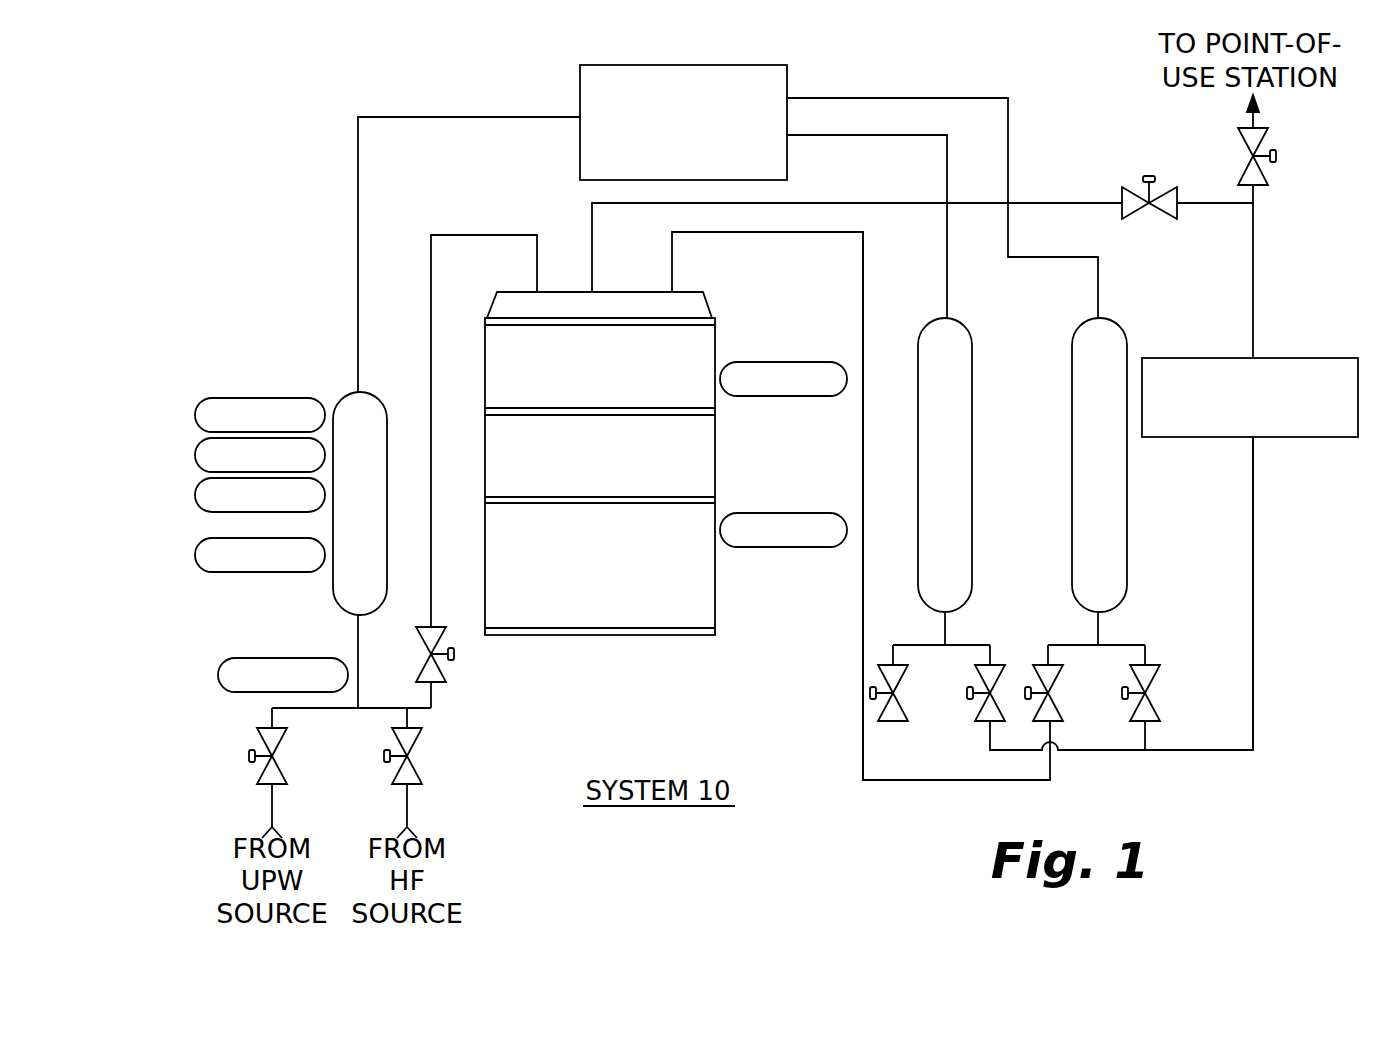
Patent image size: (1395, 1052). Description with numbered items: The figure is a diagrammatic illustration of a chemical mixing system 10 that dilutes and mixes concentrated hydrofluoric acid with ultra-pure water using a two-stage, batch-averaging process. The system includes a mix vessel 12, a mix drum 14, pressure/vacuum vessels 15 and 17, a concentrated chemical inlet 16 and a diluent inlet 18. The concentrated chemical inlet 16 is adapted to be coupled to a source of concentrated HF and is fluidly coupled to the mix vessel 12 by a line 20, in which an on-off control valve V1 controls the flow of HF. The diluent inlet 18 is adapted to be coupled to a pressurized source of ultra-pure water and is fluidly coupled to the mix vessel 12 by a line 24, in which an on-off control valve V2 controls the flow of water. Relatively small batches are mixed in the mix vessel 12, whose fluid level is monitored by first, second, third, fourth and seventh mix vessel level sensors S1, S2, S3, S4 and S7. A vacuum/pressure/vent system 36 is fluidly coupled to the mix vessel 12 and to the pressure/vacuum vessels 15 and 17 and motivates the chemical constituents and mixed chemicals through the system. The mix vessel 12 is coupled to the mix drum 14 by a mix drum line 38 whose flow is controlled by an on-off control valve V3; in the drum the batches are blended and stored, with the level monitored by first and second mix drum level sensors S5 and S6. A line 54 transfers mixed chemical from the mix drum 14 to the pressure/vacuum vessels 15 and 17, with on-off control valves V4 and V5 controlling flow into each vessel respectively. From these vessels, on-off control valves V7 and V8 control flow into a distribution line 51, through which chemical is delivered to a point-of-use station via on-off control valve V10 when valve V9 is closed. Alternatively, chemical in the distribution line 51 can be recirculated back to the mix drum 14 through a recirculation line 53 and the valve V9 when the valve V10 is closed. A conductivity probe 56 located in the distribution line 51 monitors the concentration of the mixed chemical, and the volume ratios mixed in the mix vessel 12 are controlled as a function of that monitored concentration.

The chemical mixing system 10 is at (238, 268).
The mix vessel 12 is at (333, 600).
The mix drum 14 is at (673, 635).
The pressure/vacuum vessel 15 is at (963, 320).
The concentrated chemical inlet 16 is at (408, 807).
The pressure/vacuum vessel 17 is at (1082, 323).
The diluent inlet 18 is at (270, 810).
The line 20 is at (407, 720).
The line 24 is at (272, 717).
The vacuum/pressure/vent system 36 is at (788, 75).
The mix drum line 38 is at (465, 233).
The distribution line 51 is at (1253, 282).
The recirculation line 53 is at (820, 202).
The line 54 is at (862, 660).
The conductivity probe 56 is at (1316, 437).
The first mix vessel level sensor S1 is at (197, 554).
The second mix vessel level sensor S2 is at (197, 452).
The third mix vessel level sensor S3 is at (197, 494).
The fourth mix vessel level sensor S4 is at (202, 403).
The first mix drum level sensor S5 is at (775, 513).
The second mix drum level sensor S6 is at (775, 362).
The seventh mix vessel level sensor S7 is at (220, 662).
The on-off control valve V1 is at (423, 748).
The on-off control valve V2 is at (248, 755).
The on-off control valve V3 is at (442, 682).
The on-off control valve V4 is at (883, 663).
The on-off control valve V5 is at (1040, 663).
The on-off control valve V7 is at (983, 722).
The on-off control valve V8 is at (1150, 663).
The on-off control valve V9 is at (1120, 190).
The on-off control valve V10 is at (1267, 177).